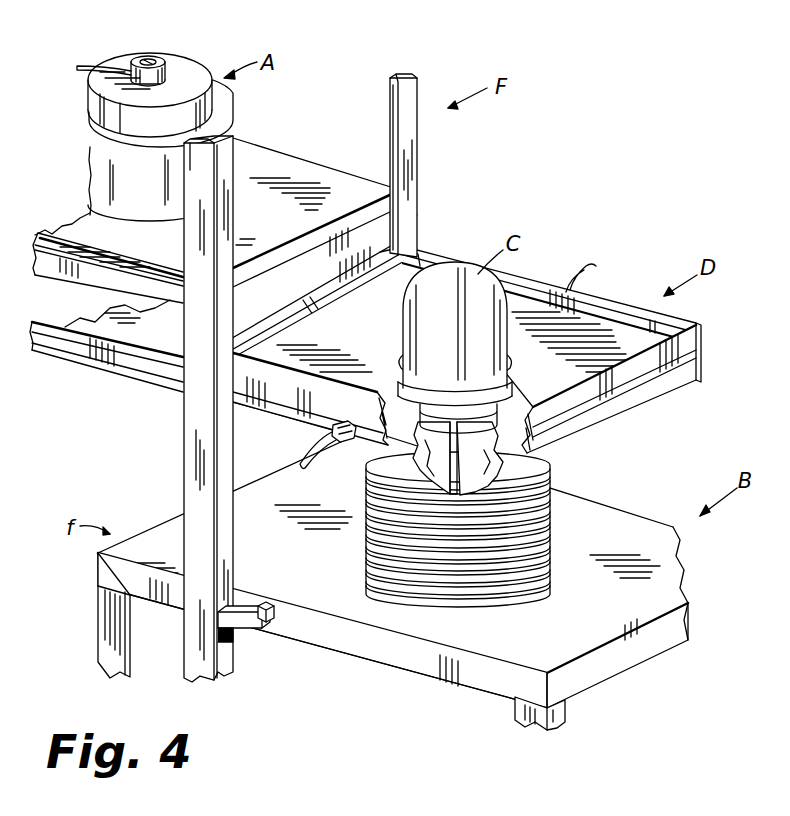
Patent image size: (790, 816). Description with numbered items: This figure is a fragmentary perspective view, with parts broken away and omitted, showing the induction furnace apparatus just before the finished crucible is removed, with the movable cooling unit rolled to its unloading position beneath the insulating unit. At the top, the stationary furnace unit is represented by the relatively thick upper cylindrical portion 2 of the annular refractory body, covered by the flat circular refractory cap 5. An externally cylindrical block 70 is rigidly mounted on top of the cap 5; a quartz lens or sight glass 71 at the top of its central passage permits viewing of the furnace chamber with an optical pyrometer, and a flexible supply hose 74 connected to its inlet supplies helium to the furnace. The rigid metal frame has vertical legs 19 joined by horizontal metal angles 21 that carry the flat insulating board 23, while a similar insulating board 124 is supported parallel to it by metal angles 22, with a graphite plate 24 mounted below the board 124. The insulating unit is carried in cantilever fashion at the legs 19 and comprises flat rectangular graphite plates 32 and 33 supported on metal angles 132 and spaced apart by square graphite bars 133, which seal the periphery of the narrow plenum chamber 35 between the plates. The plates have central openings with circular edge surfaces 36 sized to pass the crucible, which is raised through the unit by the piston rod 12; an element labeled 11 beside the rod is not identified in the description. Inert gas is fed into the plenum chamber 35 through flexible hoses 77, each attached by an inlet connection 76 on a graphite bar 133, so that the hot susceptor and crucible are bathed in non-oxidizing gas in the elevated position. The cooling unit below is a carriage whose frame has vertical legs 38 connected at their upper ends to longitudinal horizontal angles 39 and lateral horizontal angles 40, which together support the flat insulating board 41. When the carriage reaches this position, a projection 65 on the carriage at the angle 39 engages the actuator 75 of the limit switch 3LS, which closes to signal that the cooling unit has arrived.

The upper cylindrical portion 2 is at (97, 168).
The refractory cap 5 is at (100, 88).
The lamp base part 11 is at (458, 445).
The piston rod 12 is at (466, 472).
The vertical legs 19 is at (196, 466).
The horizontal metal angles 21 is at (178, 305).
The metal angles 22 is at (118, 362).
The insulating board 23 is at (290, 168).
The graphite plate 24 is at (150, 390).
The graphite plate 32 is at (393, 340).
The graphite plate 33 is at (635, 405).
The plenum chamber 35 is at (412, 383).
The circular edge surfaces 36 is at (412, 359).
The vertical legs 38 is at (103, 632).
The longitudinal horizontal angles 39 is at (417, 667).
The lateral horizontal angles 40 is at (688, 636).
The insulating board 41 is at (275, 476).
The projection 65 is at (268, 604).
The cylindrical block 70 is at (166, 72).
The quartz lens or sight glass 71 is at (147, 60).
The flexible supply hose 74 is at (105, 66).
The actuator 75 is at (276, 632).
The inlet connection 76 is at (332, 430).
The flexible hoses 77 is at (310, 472).
The insulating board 124 is at (100, 322).
The metal angles 132 is at (318, 300).
The graphite bars 133 is at (690, 375).
The limit switch 3LS is at (238, 642).